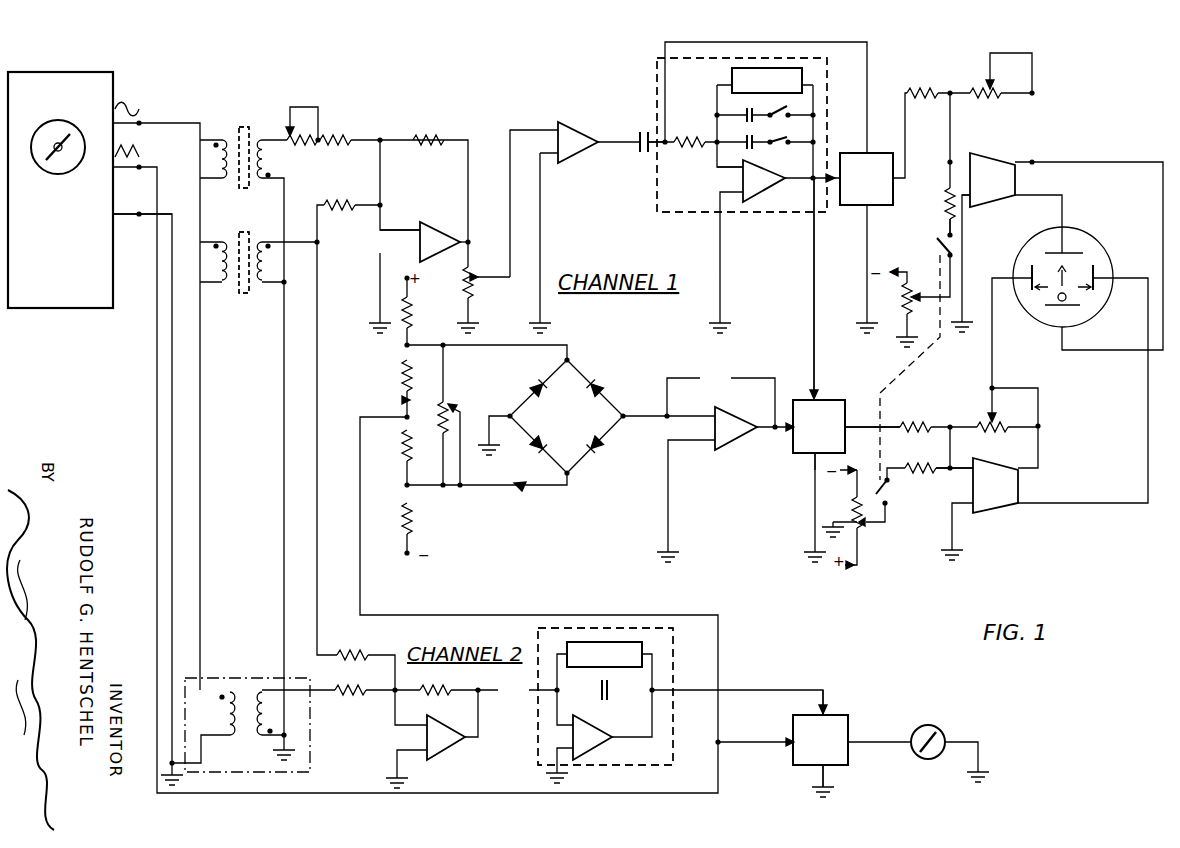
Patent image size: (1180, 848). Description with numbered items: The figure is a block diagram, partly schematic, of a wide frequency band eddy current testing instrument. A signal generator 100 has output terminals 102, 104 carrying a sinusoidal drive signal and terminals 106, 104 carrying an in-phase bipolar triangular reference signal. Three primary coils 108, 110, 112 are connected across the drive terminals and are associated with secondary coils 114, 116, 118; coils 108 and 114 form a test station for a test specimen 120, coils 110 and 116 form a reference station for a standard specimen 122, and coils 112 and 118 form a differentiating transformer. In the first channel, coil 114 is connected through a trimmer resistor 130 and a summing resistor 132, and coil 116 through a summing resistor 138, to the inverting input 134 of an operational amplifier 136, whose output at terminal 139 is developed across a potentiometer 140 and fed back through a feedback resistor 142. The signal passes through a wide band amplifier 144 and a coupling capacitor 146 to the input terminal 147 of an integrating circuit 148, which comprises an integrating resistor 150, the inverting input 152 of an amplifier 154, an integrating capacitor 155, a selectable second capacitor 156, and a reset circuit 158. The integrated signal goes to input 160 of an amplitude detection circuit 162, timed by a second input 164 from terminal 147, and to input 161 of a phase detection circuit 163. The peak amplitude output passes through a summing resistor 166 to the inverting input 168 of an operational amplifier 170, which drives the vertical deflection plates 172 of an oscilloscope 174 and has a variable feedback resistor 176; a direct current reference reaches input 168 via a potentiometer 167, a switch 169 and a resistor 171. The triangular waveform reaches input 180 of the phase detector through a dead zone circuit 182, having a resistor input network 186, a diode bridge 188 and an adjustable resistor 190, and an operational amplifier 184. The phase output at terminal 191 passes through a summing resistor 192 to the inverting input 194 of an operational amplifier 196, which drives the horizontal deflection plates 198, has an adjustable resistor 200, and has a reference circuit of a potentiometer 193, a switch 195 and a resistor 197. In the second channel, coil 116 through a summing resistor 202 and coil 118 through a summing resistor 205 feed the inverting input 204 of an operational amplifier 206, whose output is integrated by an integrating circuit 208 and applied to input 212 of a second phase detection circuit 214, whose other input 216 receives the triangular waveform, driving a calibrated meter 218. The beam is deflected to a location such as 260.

The signal generator 100 is at (70, 296).
The output terminal 102 is at (139, 123).
The output terminal (ground) 104 is at (139, 216).
The output terminal 106 is at (139, 167).
The primary coil 108 is at (221, 138).
The primary coil 110 is at (219, 258).
The primary coil 112 is at (232, 688).
The secondary coil 114 is at (266, 162).
The secondary coil 116 is at (268, 284).
The secondary coil 118 is at (262, 690).
The test specimen 120 is at (244, 127).
The standard specimen 122 is at (244, 294).
The trimmer resistor 130 is at (288, 138).
The summing resistor 132 is at (336, 137).
The inverting input 134 is at (419, 229).
The operational amplifier 136 is at (437, 225).
The summing resistor 138 is at (340, 208).
The output terminal 139 is at (469, 241).
The potentiometer 140 is at (471, 290).
The feedback resistor 142 is at (424, 139).
The wide band amplifier 144 is at (578, 158).
The coupling capacitor 146 is at (638, 138).
The input terminal 147 is at (662, 147).
The integrating circuit 148 is at (735, 57).
The integrating resistor 150 is at (690, 140).
The inverting input 152 is at (740, 172).
The amplifier 154 is at (758, 192).
The integrating capacitor 155 is at (760, 148).
The second capacitor 156 is at (755, 112).
The reset circuit 158 is at (785, 70).
The input 160 is at (838, 185).
The input 161 is at (820, 400).
The amplitude detection circuit 162 is at (892, 206).
The phase detection circuit 163 is at (806, 456).
The second input 164 is at (867, 150).
The summing resistor 166 is at (918, 92).
The potentiometer 167 is at (900, 312).
The inverting input 168 is at (972, 160).
The switch 169 is at (934, 241).
The operational amplifier 170 is at (988, 204).
The resistor 171 is at (944, 214).
The vertical deflection plates 172 is at (1082, 252).
The oscilloscope 174 is at (1078, 236).
The variable feedback resistor 176 is at (992, 92).
The input 180 is at (785, 432).
The dead zone circuit 182 is at (522, 492).
The operational amplifier 184 is at (733, 446).
The resistor input network 186 is at (404, 400).
The diode bridge 188 is at (583, 384).
The adjustable resistor 190 is at (447, 416).
The output terminal 191 is at (850, 428).
The summing resistor 192 is at (914, 425).
The potentiometer 193 is at (862, 528).
The inverting input 194 is at (969, 470).
The switch 195 is at (888, 495).
The operational amplifier 196 is at (1020, 498).
The resistor 197 is at (930, 466).
The horizontal deflection plates 198 is at (1030, 272).
The adjustable resistor 200 is at (982, 425).
The summing resistor 202 is at (360, 636).
The inverting input 204 is at (430, 694).
The summing resistor 205 is at (352, 700).
The operational amplifier 206 is at (444, 752).
The integrating circuit 208 is at (676, 660).
The input 212 is at (826, 716).
The second phase detection circuit 214 is at (850, 766).
The input 216 is at (788, 744).
The meter 218 is at (932, 726).
The beam location 260 is at (1095, 270).